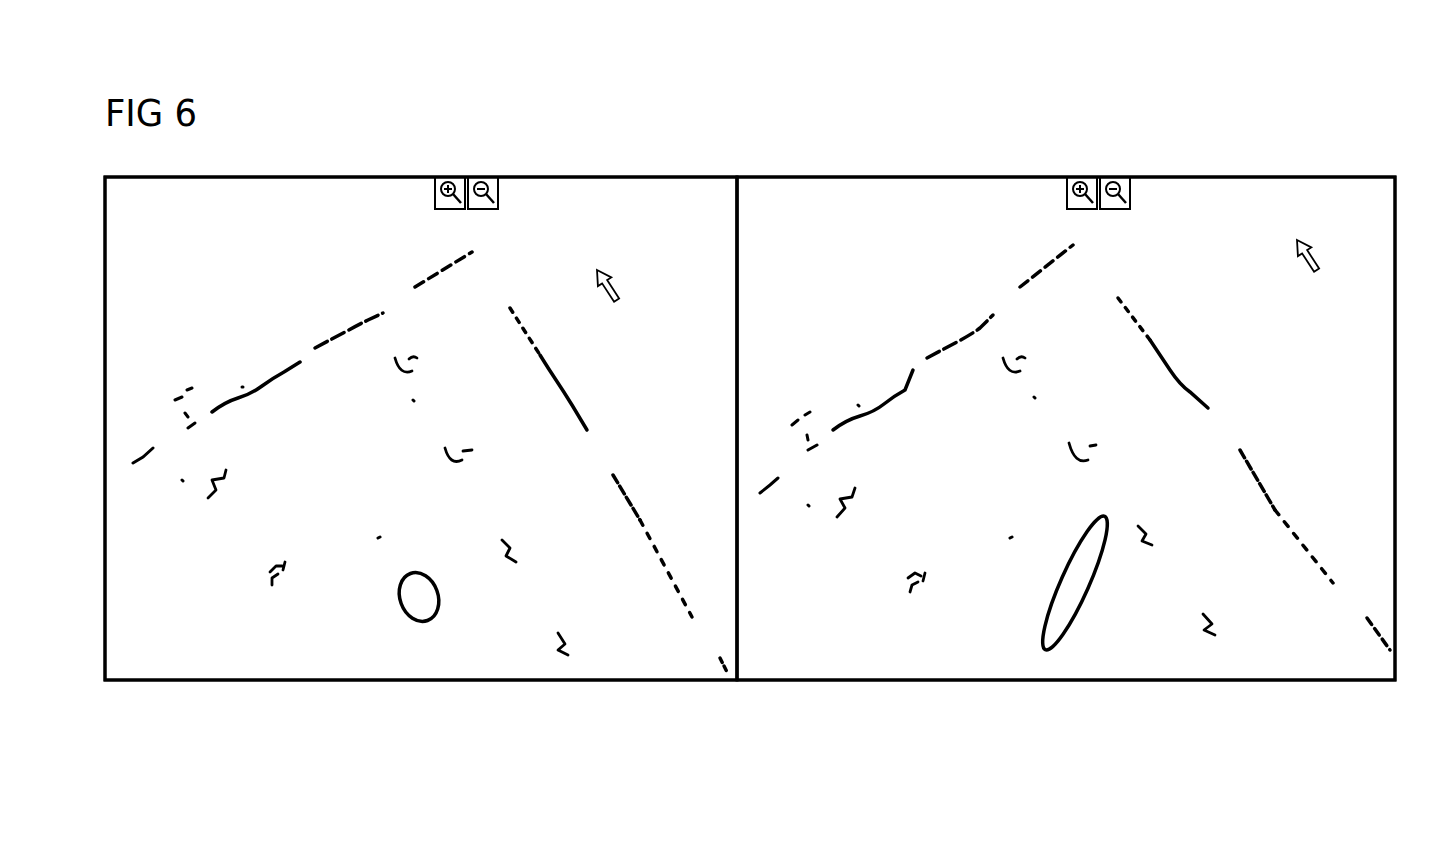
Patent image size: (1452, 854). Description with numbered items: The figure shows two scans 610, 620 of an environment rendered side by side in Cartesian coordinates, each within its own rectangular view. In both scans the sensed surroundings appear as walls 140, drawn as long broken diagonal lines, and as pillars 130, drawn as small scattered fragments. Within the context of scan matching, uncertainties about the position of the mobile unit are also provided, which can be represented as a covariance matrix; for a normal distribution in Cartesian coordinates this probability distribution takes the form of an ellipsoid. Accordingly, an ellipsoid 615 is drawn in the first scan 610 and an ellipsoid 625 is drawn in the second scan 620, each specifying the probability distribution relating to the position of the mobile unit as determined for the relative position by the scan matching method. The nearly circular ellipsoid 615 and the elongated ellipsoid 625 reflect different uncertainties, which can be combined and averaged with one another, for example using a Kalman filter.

The pillars 130 is at (418, 366).
The walls 140 is at (255, 382).
The scan 610 is at (685, 662).
The ellipsoid 615 is at (441, 590).
The scan 620 is at (1317, 663).
The ellipsoid 625 is at (1095, 580).